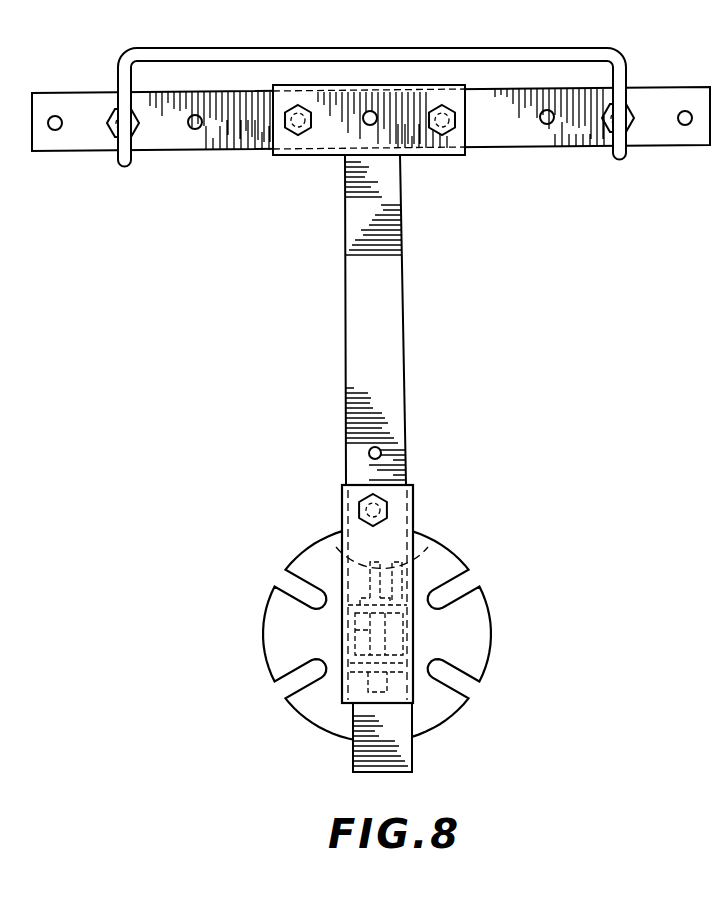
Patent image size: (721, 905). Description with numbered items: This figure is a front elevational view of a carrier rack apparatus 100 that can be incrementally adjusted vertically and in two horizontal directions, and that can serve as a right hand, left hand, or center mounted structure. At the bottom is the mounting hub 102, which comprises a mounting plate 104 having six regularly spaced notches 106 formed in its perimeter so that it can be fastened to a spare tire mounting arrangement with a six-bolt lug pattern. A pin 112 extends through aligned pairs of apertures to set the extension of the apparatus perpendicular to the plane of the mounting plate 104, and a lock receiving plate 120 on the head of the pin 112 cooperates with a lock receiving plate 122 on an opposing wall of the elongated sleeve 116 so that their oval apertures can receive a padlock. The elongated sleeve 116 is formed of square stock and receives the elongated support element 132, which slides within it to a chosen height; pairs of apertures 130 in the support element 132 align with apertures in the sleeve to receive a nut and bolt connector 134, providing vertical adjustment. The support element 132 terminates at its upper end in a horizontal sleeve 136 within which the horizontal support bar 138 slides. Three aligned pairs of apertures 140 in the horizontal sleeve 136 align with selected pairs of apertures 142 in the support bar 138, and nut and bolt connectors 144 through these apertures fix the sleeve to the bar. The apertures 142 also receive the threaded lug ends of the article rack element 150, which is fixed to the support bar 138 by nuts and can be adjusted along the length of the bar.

The carrier rack apparatus 100 is at (484, 341).
The mounting hub 102 is at (492, 560).
The mounting plate 104 is at (483, 637).
The notches 106 is at (249, 546).
The pin 112 is at (348, 636).
The elongated sleeve 116 is at (341, 495).
The lock receiving plate 120 is at (335, 545).
The lock receiving plate 122 is at (430, 562).
The apertures 130 is at (380, 450).
The elongated support element 132 is at (347, 316).
The nut and bolt connector 134 is at (461, 481).
The horizontal sleeve 136 is at (424, 157).
The horizontal support bar 138 is at (592, 135).
The apertures 140 is at (363, 122).
The apertures 142 is at (191, 128).
The nut and bolt connectors 144 is at (282, 124).
The article rack element 150 is at (634, 57).